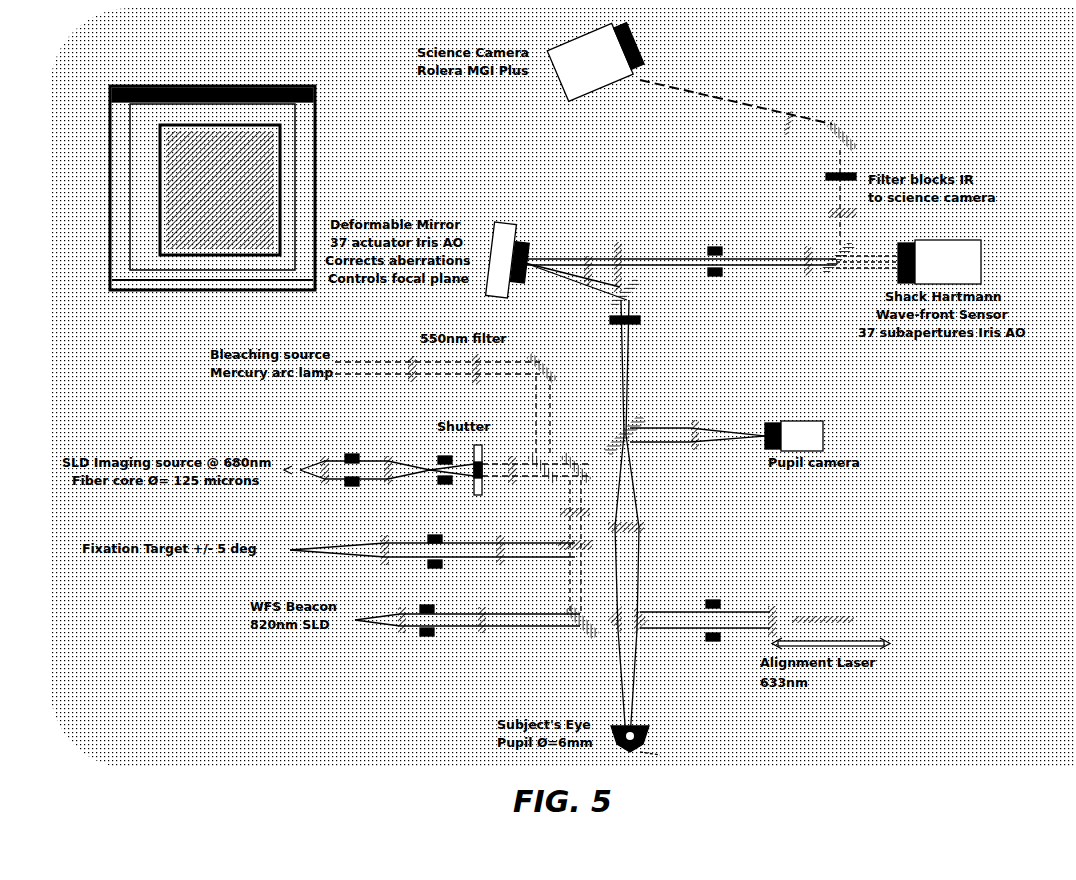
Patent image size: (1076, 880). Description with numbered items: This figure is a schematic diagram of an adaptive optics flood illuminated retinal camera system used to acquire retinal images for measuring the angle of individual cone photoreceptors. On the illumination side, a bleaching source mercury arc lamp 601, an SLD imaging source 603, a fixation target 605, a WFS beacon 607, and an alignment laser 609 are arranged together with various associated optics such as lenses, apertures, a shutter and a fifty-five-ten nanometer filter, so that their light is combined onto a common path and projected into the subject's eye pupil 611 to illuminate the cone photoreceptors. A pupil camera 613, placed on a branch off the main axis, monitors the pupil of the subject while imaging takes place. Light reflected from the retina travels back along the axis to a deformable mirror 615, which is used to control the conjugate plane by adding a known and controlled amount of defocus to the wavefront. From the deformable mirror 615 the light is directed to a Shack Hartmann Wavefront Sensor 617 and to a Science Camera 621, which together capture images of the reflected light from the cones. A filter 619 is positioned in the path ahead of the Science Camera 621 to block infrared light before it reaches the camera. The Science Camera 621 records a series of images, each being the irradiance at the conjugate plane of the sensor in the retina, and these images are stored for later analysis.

The bleaching source mercury arc lamp 601 is at (345, 357).
The SLD imaging source 603 is at (283, 456).
The fixation target 605 is at (290, 547).
The WFS beacon 607 is at (355, 614).
The alignment laser 609 is at (855, 622).
The subject's eye pupil 611 is at (655, 735).
The pupil camera 613 is at (820, 430).
The deformable mirror 615 is at (506, 224).
The Shack Hartmann Wavefront Sensor 617 is at (973, 252).
The filter 619 is at (852, 172).
The Science Camera 621 is at (612, 50).